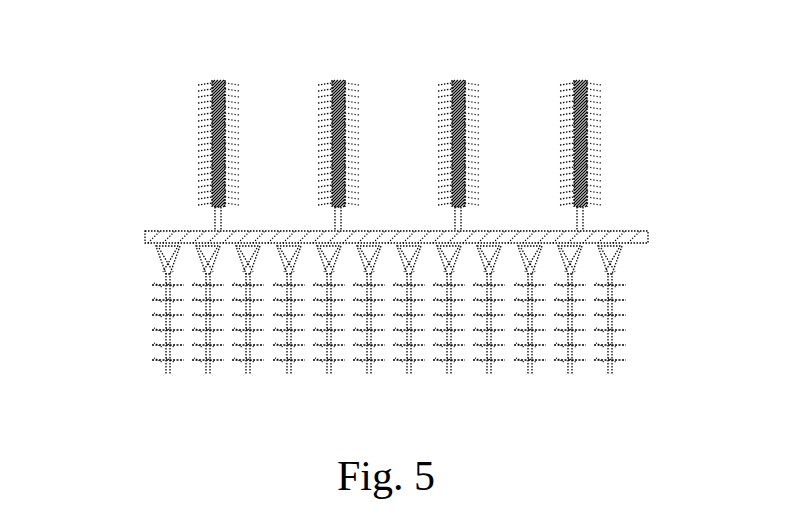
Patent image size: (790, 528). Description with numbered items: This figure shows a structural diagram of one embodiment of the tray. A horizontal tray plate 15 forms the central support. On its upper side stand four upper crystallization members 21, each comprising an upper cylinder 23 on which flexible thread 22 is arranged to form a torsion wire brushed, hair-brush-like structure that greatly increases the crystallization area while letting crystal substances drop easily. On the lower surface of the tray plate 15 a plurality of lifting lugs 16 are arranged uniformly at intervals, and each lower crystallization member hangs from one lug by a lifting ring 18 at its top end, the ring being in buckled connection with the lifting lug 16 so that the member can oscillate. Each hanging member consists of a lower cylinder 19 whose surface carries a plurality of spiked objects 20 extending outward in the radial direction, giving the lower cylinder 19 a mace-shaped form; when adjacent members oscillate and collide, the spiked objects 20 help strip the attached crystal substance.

The tray plate 15 is at (366, 276).
The lifting lug 16 is at (160, 250).
The lifting ring 18 is at (613, 262).
The lower cylinder 19 is at (163, 373).
The spiked object 20 is at (158, 326).
The upper crystallization member 21 is at (390, 137).
The flexible thread 22 is at (188, 137).
The upper cylinder 23 is at (583, 230).